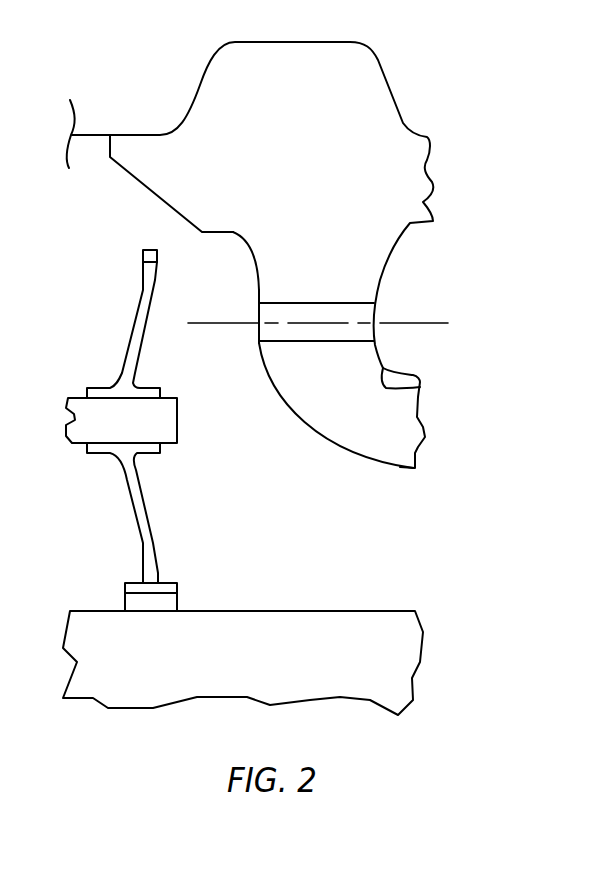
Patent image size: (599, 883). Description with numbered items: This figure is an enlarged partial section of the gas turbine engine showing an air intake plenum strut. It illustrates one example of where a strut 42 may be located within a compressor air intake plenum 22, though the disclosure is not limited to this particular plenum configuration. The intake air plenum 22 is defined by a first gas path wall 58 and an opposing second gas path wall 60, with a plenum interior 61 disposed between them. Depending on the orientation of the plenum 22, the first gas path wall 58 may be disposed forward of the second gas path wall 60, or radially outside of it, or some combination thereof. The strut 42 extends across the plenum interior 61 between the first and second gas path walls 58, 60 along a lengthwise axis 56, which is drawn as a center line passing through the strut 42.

The compressor air intake plenum 22 is at (463, 95).
The strut 42 is at (333, 298).
The lengthwise axis 56 is at (443, 322).
The first gas path wall 58 is at (259, 289).
The second gas path wall 60 is at (420, 387).
The plenum interior 61 is at (322, 388).